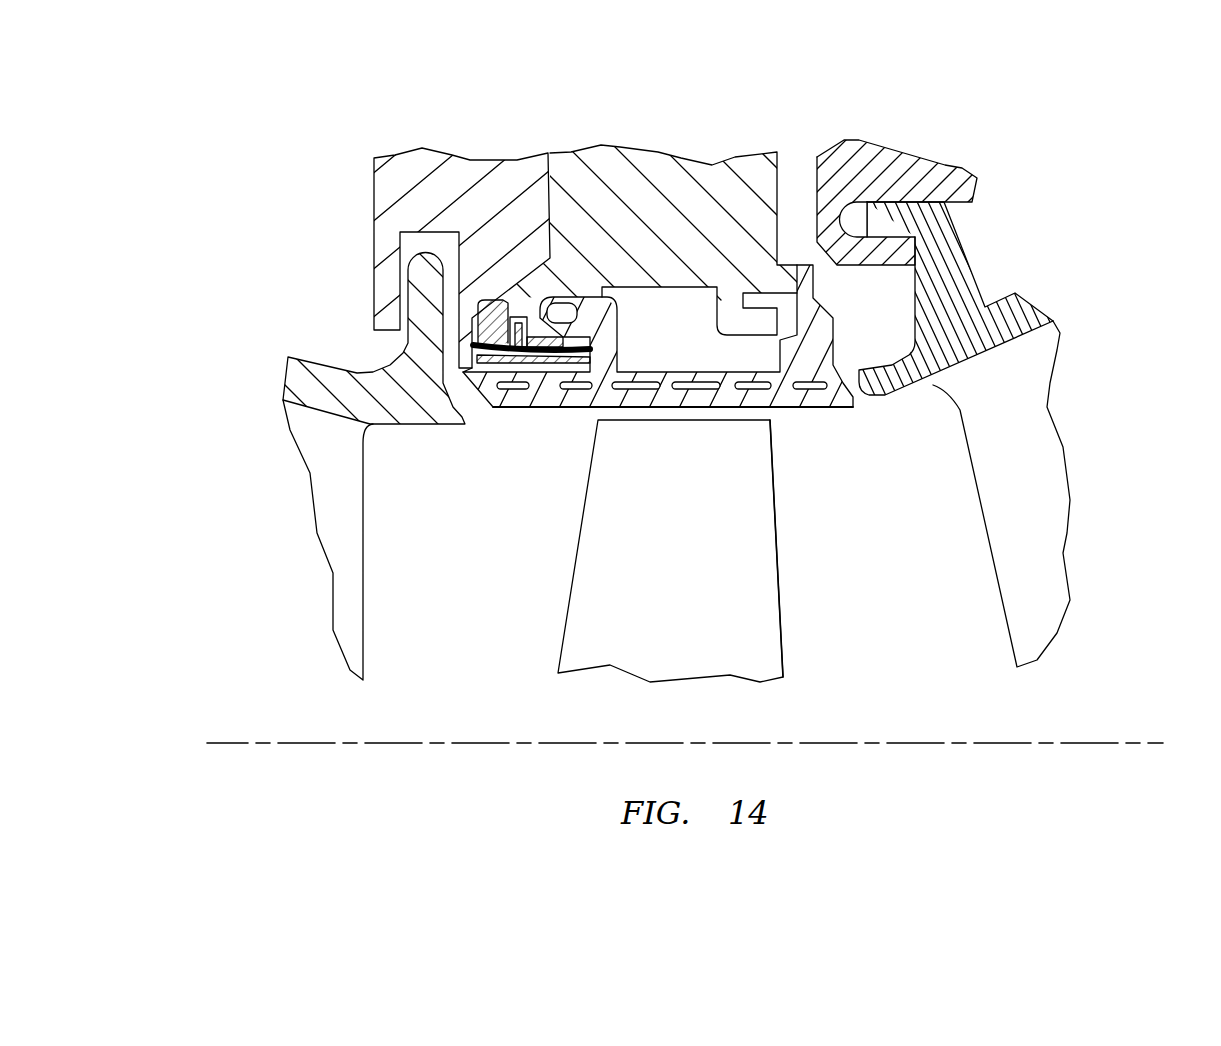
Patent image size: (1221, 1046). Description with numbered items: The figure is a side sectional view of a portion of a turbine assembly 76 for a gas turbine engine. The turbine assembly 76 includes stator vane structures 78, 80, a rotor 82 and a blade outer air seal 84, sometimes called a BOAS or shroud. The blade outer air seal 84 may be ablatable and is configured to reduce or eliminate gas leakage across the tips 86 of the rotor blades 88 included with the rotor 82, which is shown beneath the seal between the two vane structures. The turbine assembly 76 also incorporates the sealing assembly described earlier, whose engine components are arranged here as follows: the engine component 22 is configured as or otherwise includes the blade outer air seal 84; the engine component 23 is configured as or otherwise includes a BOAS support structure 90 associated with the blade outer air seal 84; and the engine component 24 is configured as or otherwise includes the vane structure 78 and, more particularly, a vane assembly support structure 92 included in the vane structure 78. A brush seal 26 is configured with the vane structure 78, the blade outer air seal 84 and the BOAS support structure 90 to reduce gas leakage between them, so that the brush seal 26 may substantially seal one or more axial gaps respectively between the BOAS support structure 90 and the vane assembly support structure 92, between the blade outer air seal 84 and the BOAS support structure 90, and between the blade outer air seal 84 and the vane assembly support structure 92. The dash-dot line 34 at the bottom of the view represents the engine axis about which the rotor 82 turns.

The vane assembly support structure 92 is at (443, 148).
The engine component 23 is at (617, 148).
The BOAS support structure 90 is at (718, 156).
The turbine assembly 76 is at (1088, 134).
The engine component 24 is at (373, 270).
The stator vane structure 80 is at (1042, 296).
The stator vane structure 78 is at (266, 400).
The engine component 22 is at (833, 410).
The blade outer air seal 84 is at (565, 410).
The tips 86 is at (762, 410).
The brush seal 26 is at (498, 372).
The rotor 82 is at (798, 652).
The rotor blades 88 is at (783, 573).
The engine central axis 34 is at (1163, 735).